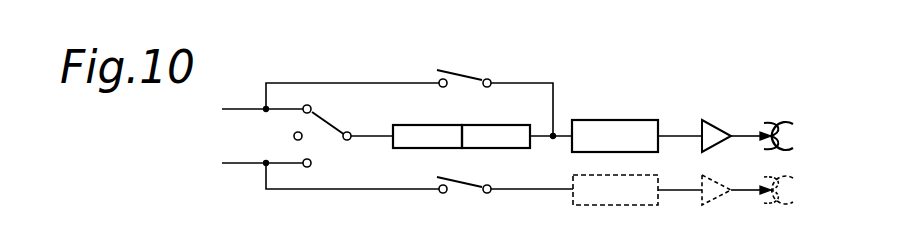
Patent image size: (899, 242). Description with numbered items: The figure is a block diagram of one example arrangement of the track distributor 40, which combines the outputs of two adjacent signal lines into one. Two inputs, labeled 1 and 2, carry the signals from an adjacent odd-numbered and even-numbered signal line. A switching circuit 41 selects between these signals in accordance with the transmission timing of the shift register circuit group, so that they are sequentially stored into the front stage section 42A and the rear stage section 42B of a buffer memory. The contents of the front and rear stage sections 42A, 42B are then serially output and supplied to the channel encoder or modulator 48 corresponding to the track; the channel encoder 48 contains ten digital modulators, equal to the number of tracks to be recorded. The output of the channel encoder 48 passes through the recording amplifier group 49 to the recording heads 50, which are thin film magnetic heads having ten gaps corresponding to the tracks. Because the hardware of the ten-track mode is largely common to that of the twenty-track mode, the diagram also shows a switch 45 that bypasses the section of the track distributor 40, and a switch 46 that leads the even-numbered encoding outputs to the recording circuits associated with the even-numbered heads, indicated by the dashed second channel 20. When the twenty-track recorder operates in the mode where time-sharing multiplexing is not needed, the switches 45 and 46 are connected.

The first input terminal 1 is at (252, 109).
The second input terminal 2 is at (255, 163).
The second transducer channel 20 is at (717, 190).
The track distributor 40 is at (545, 71).
The switching circuit 41 is at (341, 113).
The front stage section 42A is at (507, 135).
The rear stage section 42B is at (415, 133).
The switch 45 is at (467, 73).
The switch 46 is at (465, 190).
The channel encoder 48 is at (634, 108).
The recording amplifier group 49 is at (726, 113).
The recording heads 50 is at (806, 115).